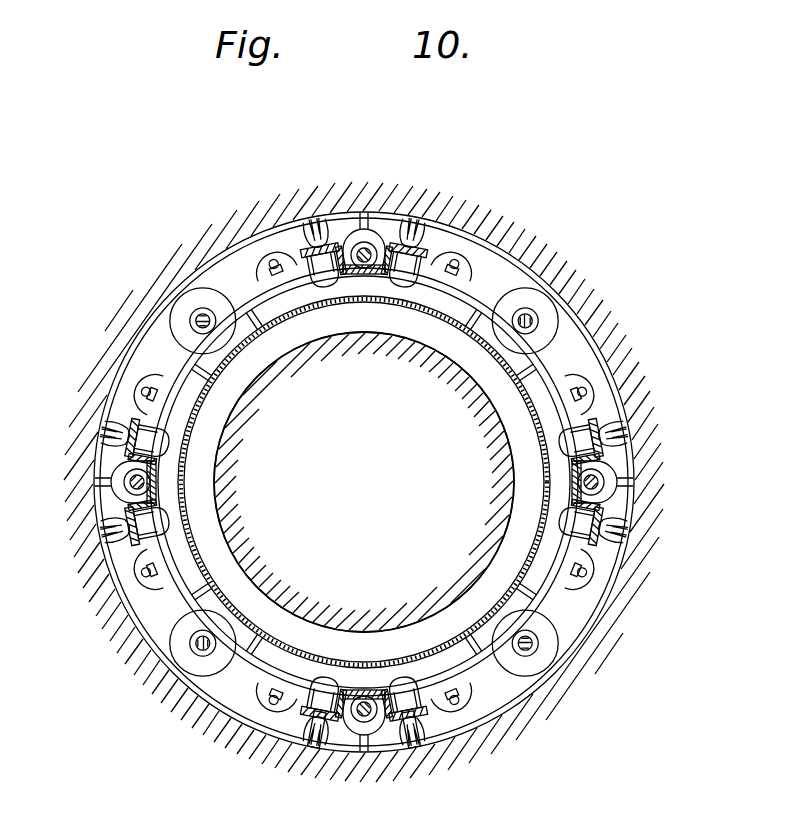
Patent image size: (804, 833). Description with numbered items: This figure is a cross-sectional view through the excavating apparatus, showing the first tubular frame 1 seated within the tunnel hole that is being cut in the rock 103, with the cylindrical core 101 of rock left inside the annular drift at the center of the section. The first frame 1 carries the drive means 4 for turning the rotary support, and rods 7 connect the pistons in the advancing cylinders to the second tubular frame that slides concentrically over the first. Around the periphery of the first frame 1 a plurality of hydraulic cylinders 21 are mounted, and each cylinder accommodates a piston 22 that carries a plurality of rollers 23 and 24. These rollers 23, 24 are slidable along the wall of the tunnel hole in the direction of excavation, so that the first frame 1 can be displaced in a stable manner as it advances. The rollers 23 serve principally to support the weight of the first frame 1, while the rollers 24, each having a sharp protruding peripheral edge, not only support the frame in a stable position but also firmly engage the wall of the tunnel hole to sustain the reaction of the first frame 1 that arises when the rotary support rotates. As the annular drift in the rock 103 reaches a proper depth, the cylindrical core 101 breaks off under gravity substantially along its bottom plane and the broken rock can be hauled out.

The first tubular frame 1 is at (298, 318).
The cylindrical core 101 is at (330, 600).
The rock 103 is at (487, 735).
The drive means 4 is at (140, 372).
The rods 7 is at (538, 295).
The hydraulic cylinders 21 is at (392, 300).
The pistons 22 is at (604, 418).
The rollers 23 is at (311, 752).
The rollers 24 is at (322, 240).